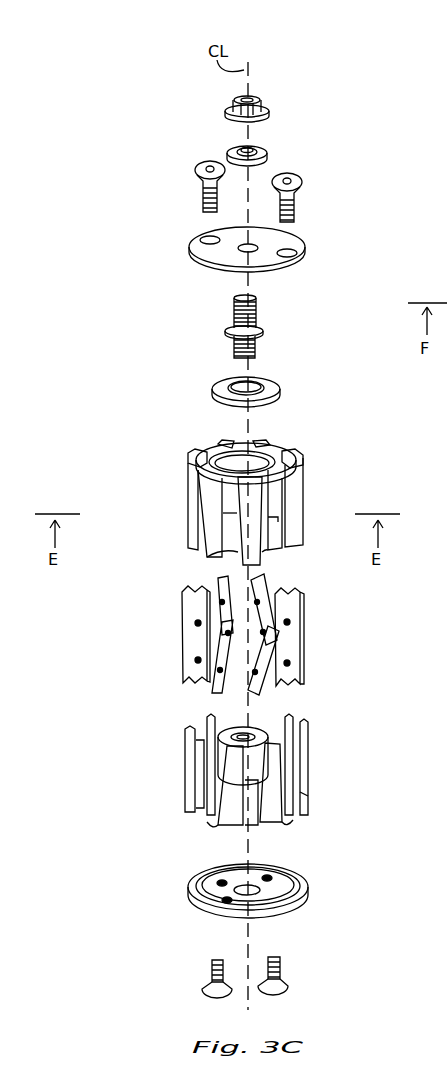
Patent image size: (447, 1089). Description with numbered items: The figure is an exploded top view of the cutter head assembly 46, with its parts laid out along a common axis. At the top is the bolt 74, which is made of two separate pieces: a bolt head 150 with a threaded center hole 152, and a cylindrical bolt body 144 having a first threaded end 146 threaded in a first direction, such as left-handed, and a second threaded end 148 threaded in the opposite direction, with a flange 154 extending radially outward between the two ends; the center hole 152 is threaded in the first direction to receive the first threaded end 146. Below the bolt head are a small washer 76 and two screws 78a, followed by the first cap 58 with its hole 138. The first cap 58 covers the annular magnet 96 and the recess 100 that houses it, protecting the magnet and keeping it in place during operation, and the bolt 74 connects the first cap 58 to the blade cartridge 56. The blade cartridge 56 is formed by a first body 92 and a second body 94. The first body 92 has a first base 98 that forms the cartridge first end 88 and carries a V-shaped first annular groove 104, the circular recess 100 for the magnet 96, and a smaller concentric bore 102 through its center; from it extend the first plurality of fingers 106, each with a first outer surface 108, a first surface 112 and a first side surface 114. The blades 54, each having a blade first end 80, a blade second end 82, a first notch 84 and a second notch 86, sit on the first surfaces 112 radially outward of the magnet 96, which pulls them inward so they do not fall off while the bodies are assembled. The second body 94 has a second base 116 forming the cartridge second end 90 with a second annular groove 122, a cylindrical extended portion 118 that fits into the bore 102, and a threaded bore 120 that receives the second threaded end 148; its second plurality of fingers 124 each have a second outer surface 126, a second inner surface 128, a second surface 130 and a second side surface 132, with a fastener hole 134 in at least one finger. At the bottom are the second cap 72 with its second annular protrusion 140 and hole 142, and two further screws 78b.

The cutter head assembly 46 is at (150, 115).
The bolt head 150 is at (268, 110).
The center hole 152 is at (250, 99).
The washer 76 is at (255, 150).
The screws 78a is at (197, 177).
The first cap 58 is at (304, 245).
The hole 138 is at (242, 245).
The bolt 74 is at (242, 322).
The first threaded end 146 is at (257, 303).
The cylindrical bolt body 144 is at (258, 322).
The flange 154 is at (264, 332).
The second threaded end 148 is at (257, 352).
The magnet 96 is at (281, 390).
The blade cartridge 56 is at (233, 496).
The cartridge first end 88 is at (200, 455).
The first body 92 is at (190, 505).
The first annular groove 104 is at (188, 460).
The first base 98 is at (288, 446).
The recess 100 is at (240, 457).
The bore 102 is at (256, 450).
The first outer surface 108 is at (300, 486).
The first plurality of fingers 106 is at (300, 528).
The first surface 112 is at (272, 550).
The first side surface 114 is at (230, 556).
The blades 54 is at (230, 642).
The blade first end 80 is at (302, 590).
The first notch 84 is at (300, 582).
The blade second end 82 is at (301, 665).
The second notch 86 is at (283, 688).
The cartridge second end 90 is at (243, 769).
The extended portion 118 is at (243, 722).
The bore 120 is at (210, 752).
The second inner surface 128 is at (213, 722).
The second outer surface 126 is at (193, 790).
The second base 116 is at (215, 818).
The second surface 130 is at (252, 820).
The second side surface 132 is at (296, 775).
The second plurality of fingers 124 is at (302, 722).
The second body 94 is at (305, 760).
The fastener hole 134 is at (305, 796).
The second annular groove 122 is at (292, 815).
The second cap 72 is at (248, 905).
The second annular protrusion 140 is at (308, 888).
The hole 142 is at (236, 886).
The screws 78b is at (210, 977).